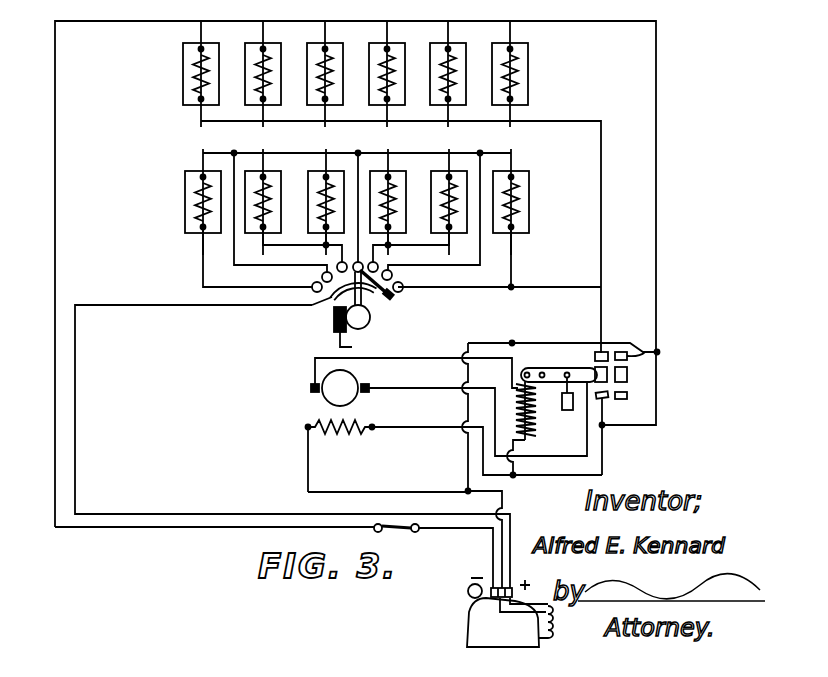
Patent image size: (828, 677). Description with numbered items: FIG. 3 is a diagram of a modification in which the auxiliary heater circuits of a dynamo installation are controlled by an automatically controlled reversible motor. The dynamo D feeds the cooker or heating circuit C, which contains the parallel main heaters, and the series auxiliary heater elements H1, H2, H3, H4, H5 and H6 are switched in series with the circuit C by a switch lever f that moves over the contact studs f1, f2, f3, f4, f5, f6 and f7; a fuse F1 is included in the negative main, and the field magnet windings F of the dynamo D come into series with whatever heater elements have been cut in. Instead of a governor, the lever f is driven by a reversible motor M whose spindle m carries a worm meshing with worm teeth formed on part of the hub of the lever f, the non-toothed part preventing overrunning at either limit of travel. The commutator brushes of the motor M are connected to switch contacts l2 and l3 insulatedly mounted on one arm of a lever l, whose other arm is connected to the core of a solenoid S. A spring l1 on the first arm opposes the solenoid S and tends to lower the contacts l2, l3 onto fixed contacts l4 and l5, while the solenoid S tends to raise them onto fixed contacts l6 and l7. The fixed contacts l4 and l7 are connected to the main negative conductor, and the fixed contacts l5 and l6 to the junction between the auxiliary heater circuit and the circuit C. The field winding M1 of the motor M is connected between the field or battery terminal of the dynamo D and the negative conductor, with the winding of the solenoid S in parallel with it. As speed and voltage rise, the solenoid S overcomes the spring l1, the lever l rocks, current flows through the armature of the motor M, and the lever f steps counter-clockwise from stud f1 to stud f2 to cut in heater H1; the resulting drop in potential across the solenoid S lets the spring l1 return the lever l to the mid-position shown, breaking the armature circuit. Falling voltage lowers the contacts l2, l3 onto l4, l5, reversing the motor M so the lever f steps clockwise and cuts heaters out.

The cooker or heating circuit C is at (369, 74).
The auxiliary heater element H1 is at (515, 193).
The auxiliary heater element H2 is at (446, 187).
The auxiliary heater element H3 is at (392, 195).
The auxiliary heater element H4 is at (328, 196).
The auxiliary heater element H5 is at (264, 192).
The auxiliary heater element H6 is at (203, 186).
The switch lever f is at (327, 303).
The contact stud f1 is at (403, 290).
The contact stud f2 is at (392, 277).
The contact stud f3 is at (389, 300).
The contact stud f4 is at (384, 296).
The contact stud f5 is at (338, 264).
The contact stud f6 is at (324, 283).
The contact stud f7 is at (313, 292).
The spindle of the motor m is at (355, 332).
The reversible motor M is at (340, 388).
The field winding of the motor M1 is at (340, 442).
The solenoid S is at (534, 416).
The lever l is at (540, 368).
The spring l1 is at (564, 407).
The switch contact l2 is at (624, 352).
The switch contact l3 is at (627, 374).
The fixed contact l4 is at (602, 398).
The fixed contact l5 is at (625, 399).
The fixed contact l6 is at (600, 352).
The fixed contact l7 is at (632, 352).
The dynamo D is at (507, 612).
The field magnet windings F is at (559, 625).
The fuse F1 is at (379, 533).